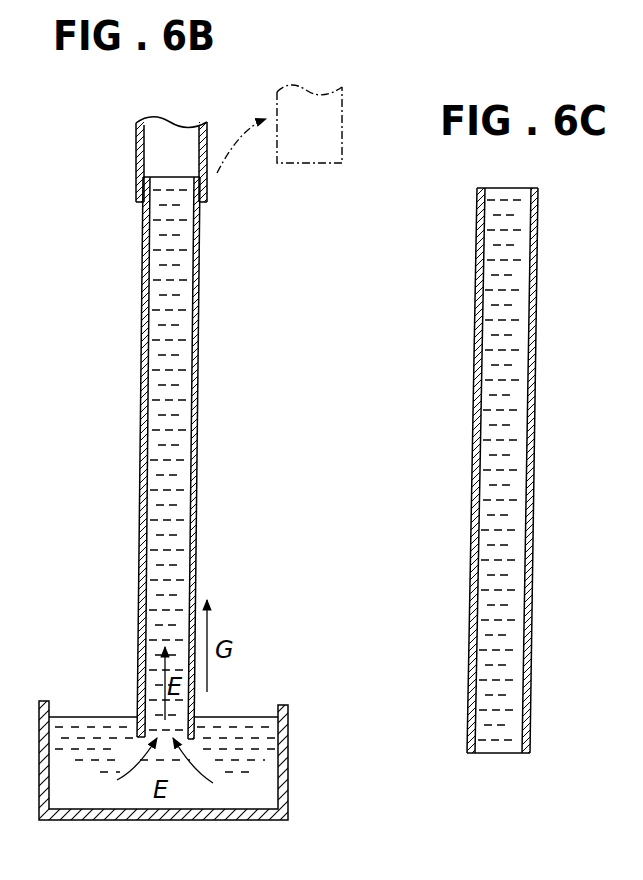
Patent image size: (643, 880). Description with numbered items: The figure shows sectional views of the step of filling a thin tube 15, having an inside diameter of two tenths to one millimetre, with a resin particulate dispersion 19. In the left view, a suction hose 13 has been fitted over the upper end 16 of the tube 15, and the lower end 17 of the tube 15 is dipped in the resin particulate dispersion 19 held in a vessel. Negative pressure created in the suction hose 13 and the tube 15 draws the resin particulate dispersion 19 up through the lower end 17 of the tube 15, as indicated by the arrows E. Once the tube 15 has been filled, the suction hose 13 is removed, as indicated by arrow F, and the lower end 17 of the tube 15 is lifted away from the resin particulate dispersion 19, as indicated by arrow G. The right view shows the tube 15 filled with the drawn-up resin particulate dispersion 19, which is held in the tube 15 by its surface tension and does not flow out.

In FIG. 6B, the suction hose 13 is at (207, 143).
In FIG. 6B, the tube 15 is at (142, 393).
In FIG. 6C, the tube 15 is at (477, 397).
In FIG. 6B, the upper end of the tube 16 is at (137, 192).
In FIG. 6B, the lower end of the tube 17 is at (195, 732).
In FIG. 6B, the resin particulate dispersion 19 is at (157, 503).
In FIG. 6C, the resin particulate dispersion 19 is at (498, 465).